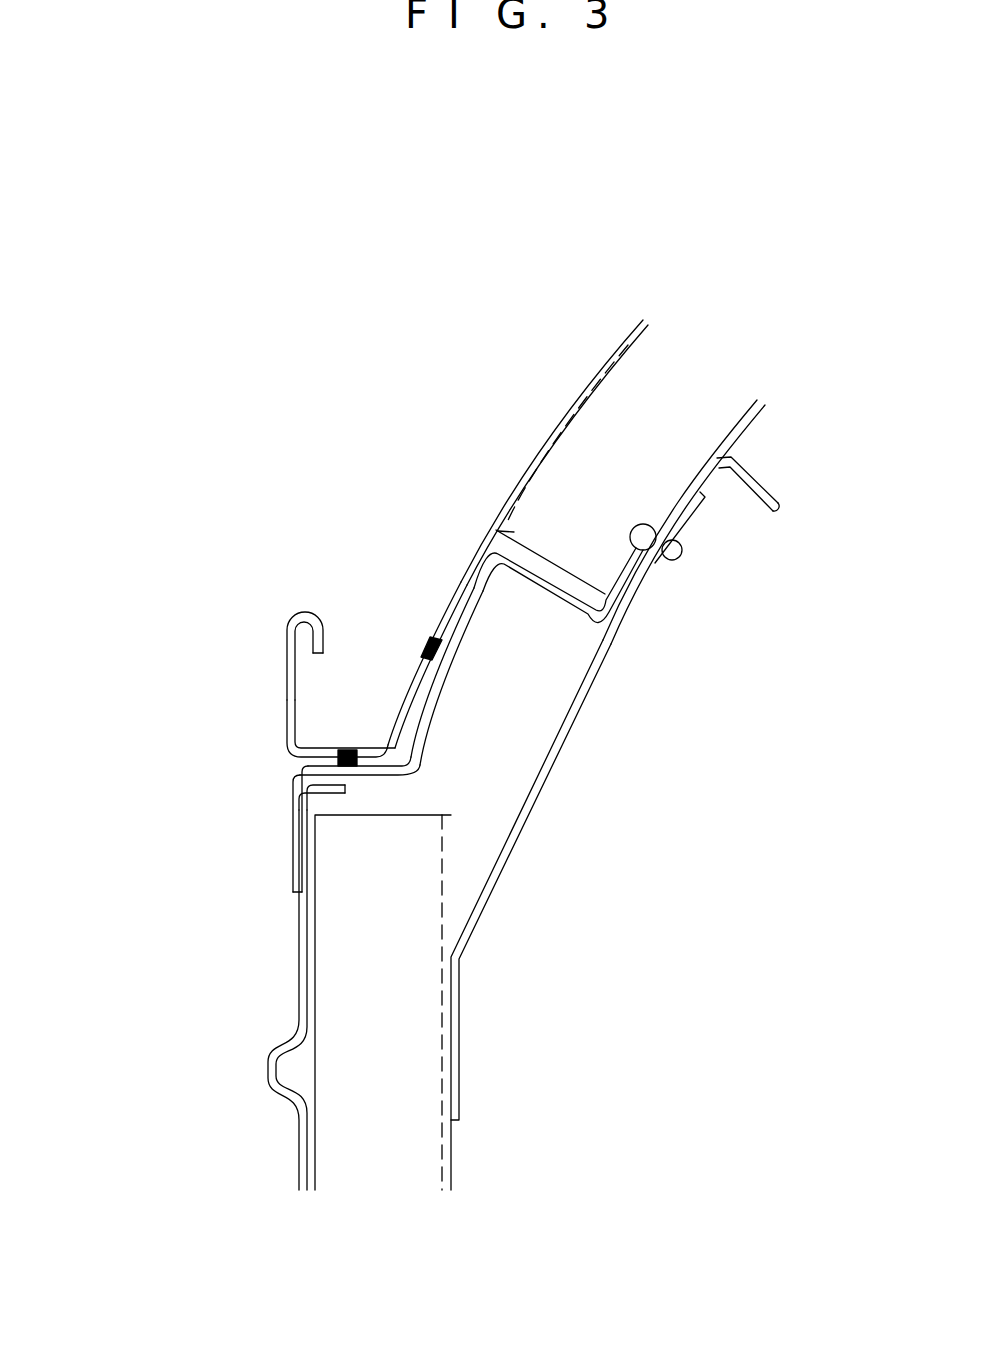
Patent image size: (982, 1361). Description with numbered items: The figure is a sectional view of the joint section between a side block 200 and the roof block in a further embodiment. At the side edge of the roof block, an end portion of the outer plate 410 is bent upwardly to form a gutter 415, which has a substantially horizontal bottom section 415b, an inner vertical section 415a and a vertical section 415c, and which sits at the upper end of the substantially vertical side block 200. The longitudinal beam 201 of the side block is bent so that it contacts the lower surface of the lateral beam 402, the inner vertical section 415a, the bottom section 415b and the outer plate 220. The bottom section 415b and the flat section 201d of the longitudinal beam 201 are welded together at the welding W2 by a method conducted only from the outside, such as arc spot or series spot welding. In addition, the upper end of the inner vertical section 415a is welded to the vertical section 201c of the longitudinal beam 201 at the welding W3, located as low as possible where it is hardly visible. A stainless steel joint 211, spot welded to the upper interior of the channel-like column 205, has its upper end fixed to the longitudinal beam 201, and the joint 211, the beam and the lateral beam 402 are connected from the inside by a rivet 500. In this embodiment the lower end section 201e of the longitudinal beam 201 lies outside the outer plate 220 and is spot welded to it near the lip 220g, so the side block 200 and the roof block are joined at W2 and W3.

The outer plate 410 is at (597, 377).
The lateral beam 402 is at (687, 373).
The gutter 415 is at (313, 608).
The inner vertical section 415a is at (427, 643).
The bottom section 415b is at (310, 745).
The vertical section 415c is at (291, 632).
The welding W2 is at (352, 749).
The welding W3 is at (421, 637).
The longitudinal beam 201 is at (401, 711).
The vertical section 201c is at (437, 667).
The flat section 201d is at (377, 783).
The lower end section 201e is at (291, 823).
The joint 211 is at (528, 836).
The rivet 500 is at (677, 563).
The side block 200 is at (367, 896).
The outer plate 220 is at (291, 987).
The lip of outer panel 220g is at (343, 793).
The column 205 is at (375, 1167).